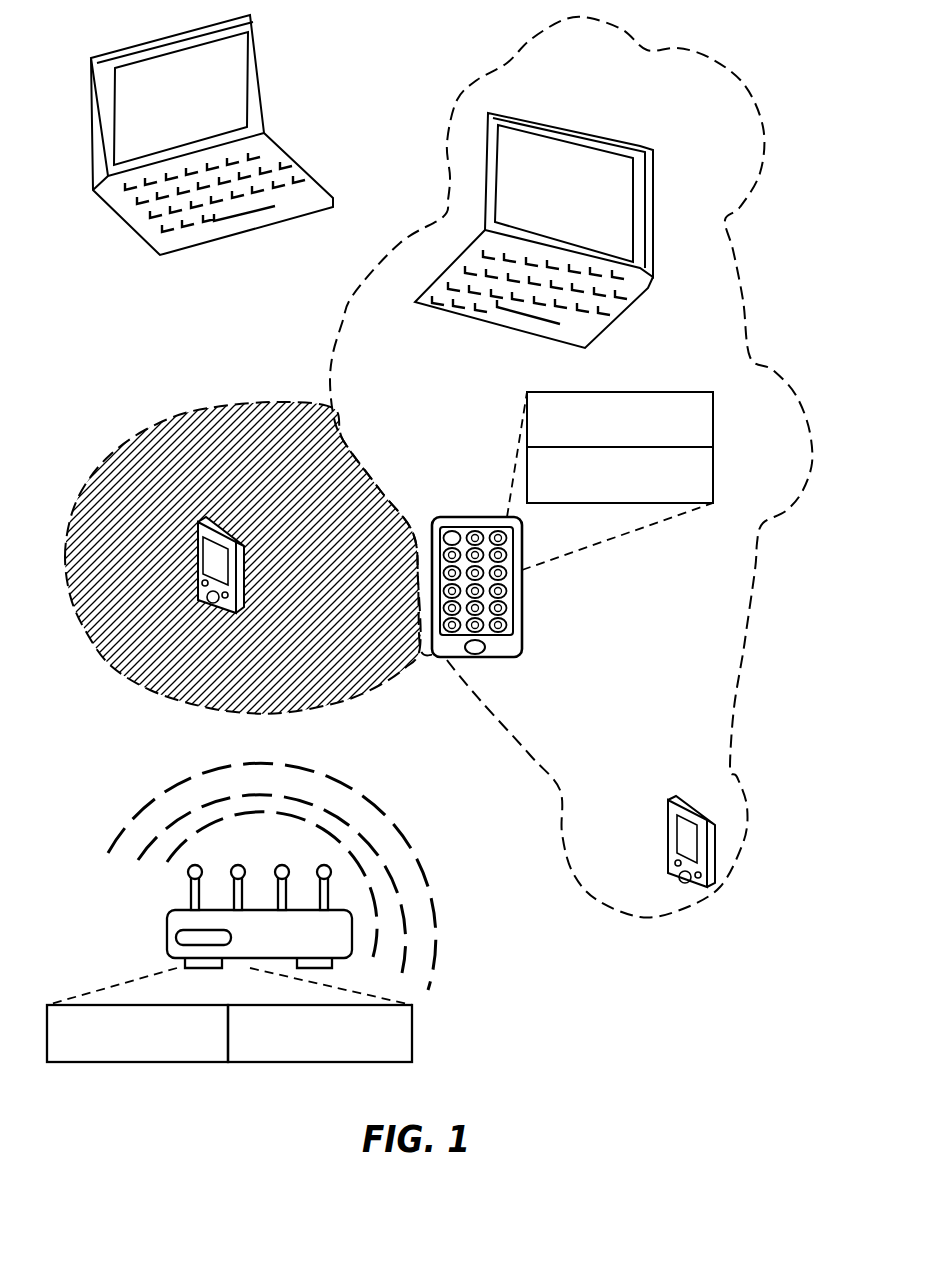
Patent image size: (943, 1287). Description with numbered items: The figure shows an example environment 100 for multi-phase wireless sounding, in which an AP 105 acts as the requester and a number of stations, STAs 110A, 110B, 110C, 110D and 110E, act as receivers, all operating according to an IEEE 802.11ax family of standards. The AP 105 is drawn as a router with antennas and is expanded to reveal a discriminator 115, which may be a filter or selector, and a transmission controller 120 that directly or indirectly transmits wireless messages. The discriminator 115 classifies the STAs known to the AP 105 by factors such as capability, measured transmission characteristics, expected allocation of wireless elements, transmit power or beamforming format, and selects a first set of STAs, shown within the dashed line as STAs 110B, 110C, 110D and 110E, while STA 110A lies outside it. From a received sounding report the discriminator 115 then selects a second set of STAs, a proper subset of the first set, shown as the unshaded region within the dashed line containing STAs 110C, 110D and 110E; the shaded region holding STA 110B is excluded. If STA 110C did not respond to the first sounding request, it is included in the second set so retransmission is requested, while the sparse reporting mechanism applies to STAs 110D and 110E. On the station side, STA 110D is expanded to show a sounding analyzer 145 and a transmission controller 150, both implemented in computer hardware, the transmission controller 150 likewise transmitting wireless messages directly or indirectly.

The environment 100 is at (704, 33).
The AP 105 is at (167, 917).
The STA 110A is at (160, 256).
The STA 110B is at (208, 520).
The STA 110C is at (641, 146).
The STA 110D is at (467, 516).
The STA 110E is at (677, 798).
The discriminator 115 is at (140, 1064).
The transmission controller 120 is at (295, 1064).
The sounding analyzer 145 is at (713, 421).
The transmission controller 150 is at (713, 475).